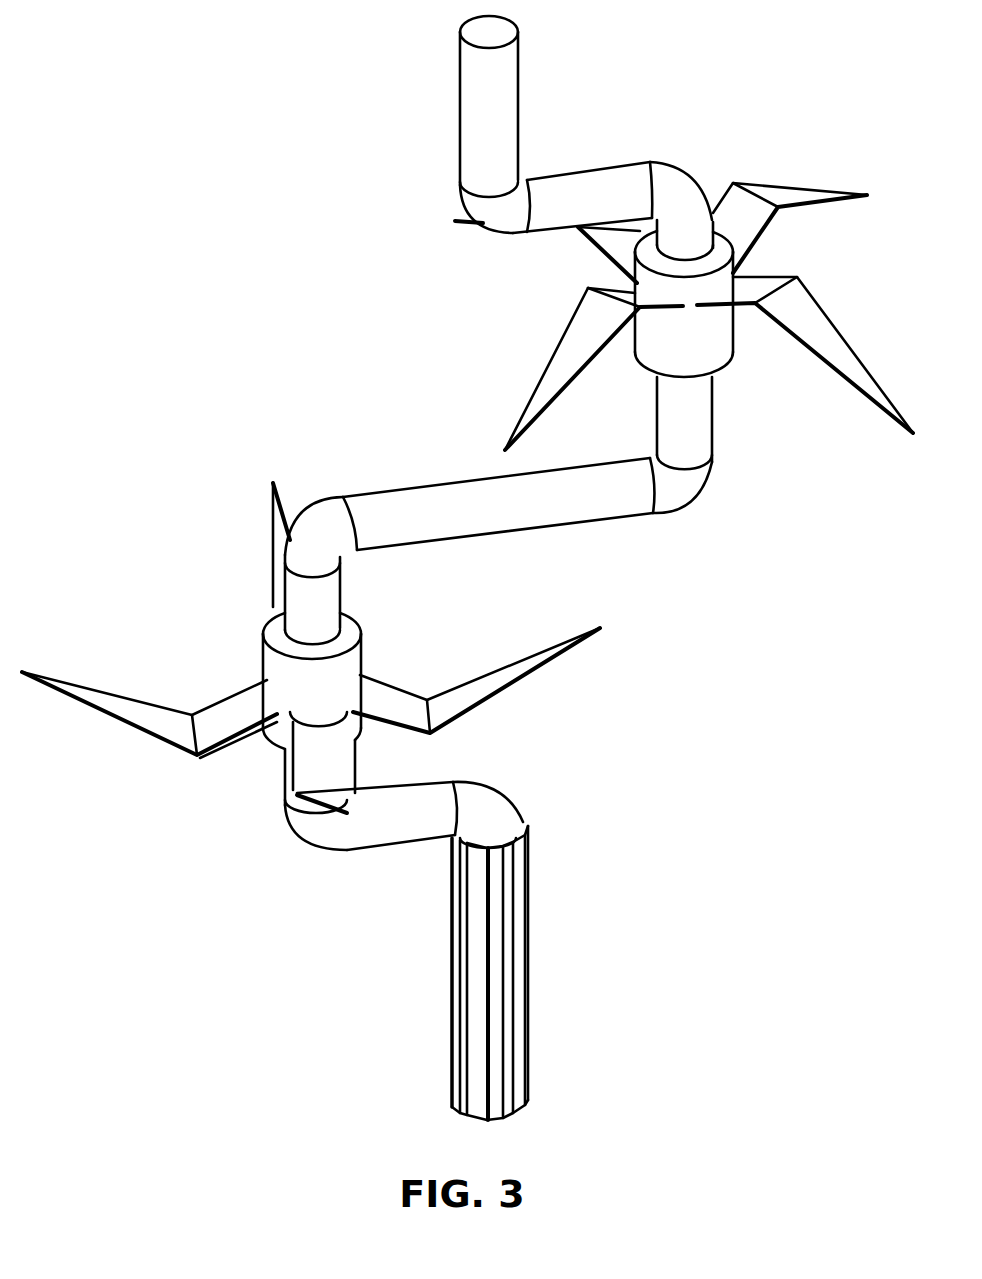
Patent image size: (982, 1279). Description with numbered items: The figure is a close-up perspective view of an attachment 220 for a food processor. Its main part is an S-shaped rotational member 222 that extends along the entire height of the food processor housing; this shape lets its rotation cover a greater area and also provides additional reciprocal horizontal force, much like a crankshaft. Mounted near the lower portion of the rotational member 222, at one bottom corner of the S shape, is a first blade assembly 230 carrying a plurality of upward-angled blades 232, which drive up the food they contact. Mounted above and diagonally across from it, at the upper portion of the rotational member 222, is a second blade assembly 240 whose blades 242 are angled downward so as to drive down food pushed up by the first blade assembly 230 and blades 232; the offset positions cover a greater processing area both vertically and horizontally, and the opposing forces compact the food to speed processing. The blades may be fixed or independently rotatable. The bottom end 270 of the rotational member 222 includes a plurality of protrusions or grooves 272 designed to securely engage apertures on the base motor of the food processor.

The attachment 220 is at (588, 503).
The rotational member 222 is at (498, 504).
The first blade assembly 230 is at (312, 681).
The blades 232 is at (320, 753).
The second blade assembly 240 is at (684, 304).
The blades 242 is at (747, 225).
The bottom end 270 is at (497, 922).
The protrusions or grooves 272 is at (462, 962).